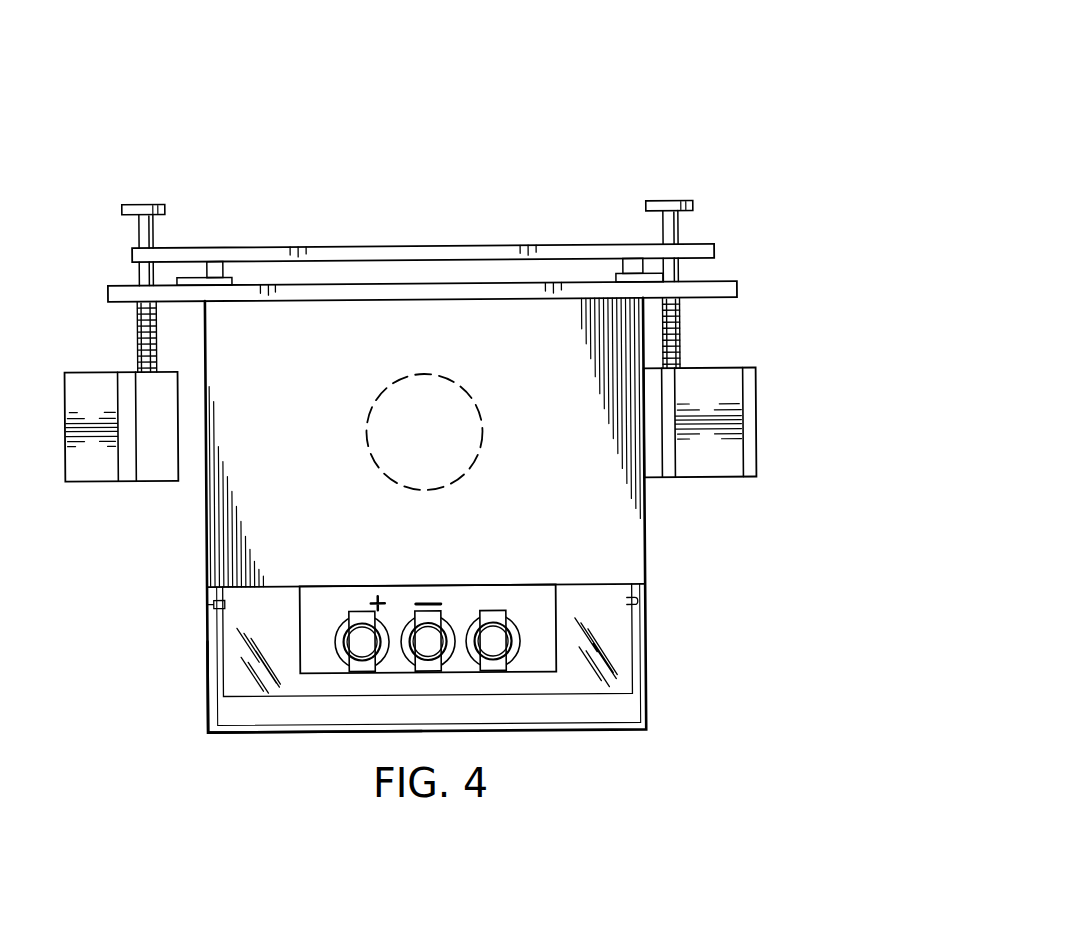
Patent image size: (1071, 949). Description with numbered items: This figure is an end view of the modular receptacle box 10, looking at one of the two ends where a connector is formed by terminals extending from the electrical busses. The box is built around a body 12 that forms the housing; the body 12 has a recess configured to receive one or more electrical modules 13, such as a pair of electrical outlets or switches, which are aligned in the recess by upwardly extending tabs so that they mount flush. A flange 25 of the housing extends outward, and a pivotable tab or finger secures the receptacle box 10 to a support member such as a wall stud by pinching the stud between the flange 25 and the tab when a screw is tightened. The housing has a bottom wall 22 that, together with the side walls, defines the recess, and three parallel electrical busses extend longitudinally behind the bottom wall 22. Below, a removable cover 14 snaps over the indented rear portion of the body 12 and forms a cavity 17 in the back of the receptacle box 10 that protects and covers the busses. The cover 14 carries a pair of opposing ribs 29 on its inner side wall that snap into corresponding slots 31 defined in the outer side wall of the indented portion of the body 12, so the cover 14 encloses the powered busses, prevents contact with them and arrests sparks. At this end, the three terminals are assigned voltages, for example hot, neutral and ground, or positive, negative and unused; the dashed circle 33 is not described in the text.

The modular receptacle box 10 is at (692, 68).
The body 12 is at (632, 630).
The electrical module 13 is at (398, 247).
The removable cover 14 is at (208, 683).
The cavity 17 is at (572, 712).
The bottom wall 22 is at (565, 585).
The flange 25 is at (737, 288).
The rib 29 is at (225, 607).
The slot 31 is at (213, 620).
The opening (phantom) 33 is at (468, 410).